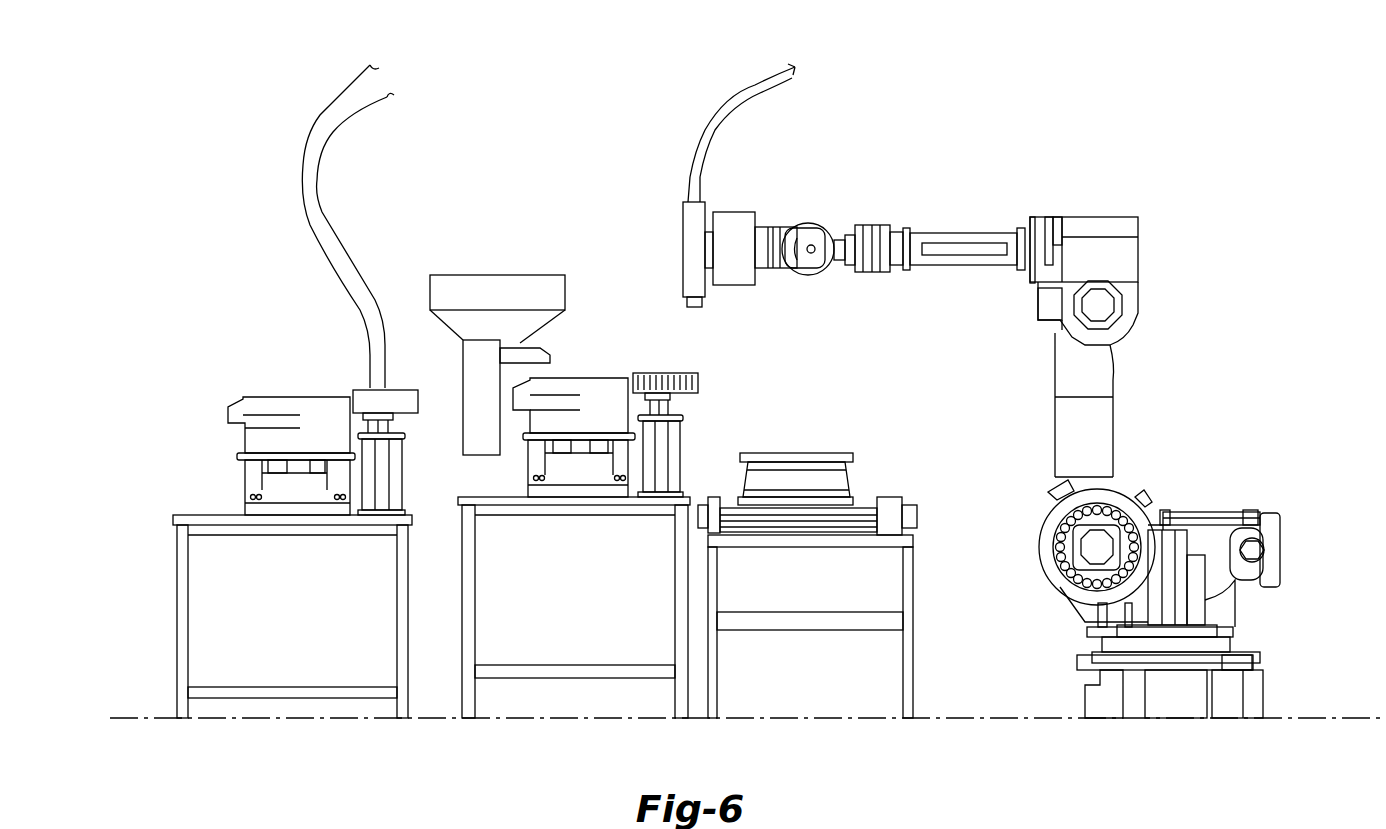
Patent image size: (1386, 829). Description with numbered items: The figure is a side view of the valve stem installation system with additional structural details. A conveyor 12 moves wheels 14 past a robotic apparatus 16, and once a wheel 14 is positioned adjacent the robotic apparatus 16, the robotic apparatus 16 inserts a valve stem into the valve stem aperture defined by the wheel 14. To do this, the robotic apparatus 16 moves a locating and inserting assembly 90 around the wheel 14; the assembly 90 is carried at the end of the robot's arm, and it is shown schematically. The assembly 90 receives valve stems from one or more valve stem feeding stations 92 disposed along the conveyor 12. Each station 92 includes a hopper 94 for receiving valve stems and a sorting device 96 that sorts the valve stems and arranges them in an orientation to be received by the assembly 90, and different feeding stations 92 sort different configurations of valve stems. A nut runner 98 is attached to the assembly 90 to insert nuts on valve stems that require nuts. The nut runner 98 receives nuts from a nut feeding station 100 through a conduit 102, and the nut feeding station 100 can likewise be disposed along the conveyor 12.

The conveyor 12 is at (910, 472).
The wheel 14 is at (833, 452).
The robotic apparatus 16 is at (1305, 538).
The locating and inserting assembly 90 is at (757, 215).
The valve stem feeding station 92 is at (543, 645).
The hopper 94 is at (442, 283).
The sorting device 96 is at (572, 377).
The nut runner 98 is at (688, 232).
The nut feeding station 100 is at (291, 667).
The conduit 102 is at (305, 175).